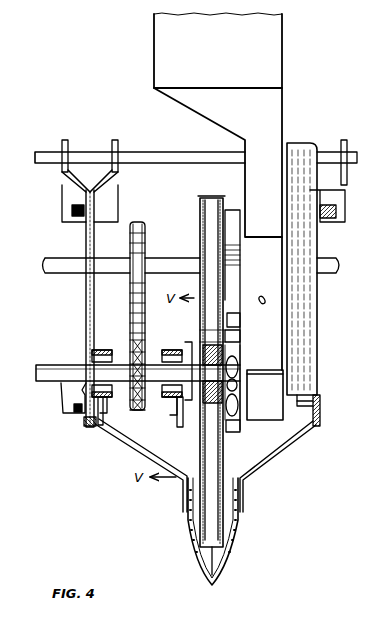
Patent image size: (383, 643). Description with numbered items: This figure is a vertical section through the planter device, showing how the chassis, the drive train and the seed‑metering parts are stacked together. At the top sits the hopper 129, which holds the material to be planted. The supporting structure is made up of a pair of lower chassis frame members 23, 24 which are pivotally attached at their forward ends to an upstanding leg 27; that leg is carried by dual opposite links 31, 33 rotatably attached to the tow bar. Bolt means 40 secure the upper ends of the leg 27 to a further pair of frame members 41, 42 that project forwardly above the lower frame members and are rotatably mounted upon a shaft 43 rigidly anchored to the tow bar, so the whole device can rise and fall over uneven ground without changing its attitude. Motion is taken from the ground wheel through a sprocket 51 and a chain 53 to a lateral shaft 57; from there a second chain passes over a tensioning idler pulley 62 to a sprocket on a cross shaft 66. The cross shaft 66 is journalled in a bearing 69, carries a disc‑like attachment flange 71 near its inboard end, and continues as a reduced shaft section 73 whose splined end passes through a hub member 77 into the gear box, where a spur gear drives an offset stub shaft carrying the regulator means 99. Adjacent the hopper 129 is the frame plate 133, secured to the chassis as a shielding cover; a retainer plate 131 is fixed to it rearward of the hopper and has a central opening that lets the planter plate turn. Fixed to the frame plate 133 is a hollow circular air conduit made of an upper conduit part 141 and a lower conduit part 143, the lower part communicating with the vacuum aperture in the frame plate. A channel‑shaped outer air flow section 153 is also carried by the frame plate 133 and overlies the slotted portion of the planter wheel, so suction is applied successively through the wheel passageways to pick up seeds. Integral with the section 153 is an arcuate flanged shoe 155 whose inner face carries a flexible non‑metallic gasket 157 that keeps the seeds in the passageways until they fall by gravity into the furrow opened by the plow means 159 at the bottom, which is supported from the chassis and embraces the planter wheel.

The hopper 129 is at (277, 63).
The shaft 43 is at (147, 156).
The frame member 41 is at (61, 176).
The frame member 42 is at (118, 174).
The bolt means 40 is at (74, 218).
The upstanding leg 27 is at (85, 296).
The lateral shaft 57 is at (49, 275).
The tensioning idler pulley 62 is at (146, 249).
The chain 53 is at (146, 315).
The arcuate flanged shoe 155 is at (224, 181).
The outer air flow section 153 is at (232, 222).
The flexible non-metallic gasket 157 is at (204, 198).
The cross shaft 66 is at (61, 366).
The link 31 is at (63, 403).
The link 33 is at (104, 406).
The sprocket 51 is at (140, 411).
The frame member 23 is at (84, 422).
The bearing 69 is at (168, 350).
The attachment flange 71 is at (200, 345).
The hub member 77 is at (203, 348).
The reduced shaft section 73 is at (190, 412).
The upper conduit part 141 is at (232, 312).
The frame plate 133 is at (240, 338).
The regulator means 99 is at (237, 370).
The retainer plate 131 is at (242, 427).
The frame member 24 is at (318, 398).
The lower conduit part 143 is at (234, 438).
The plow means 159 is at (233, 546).